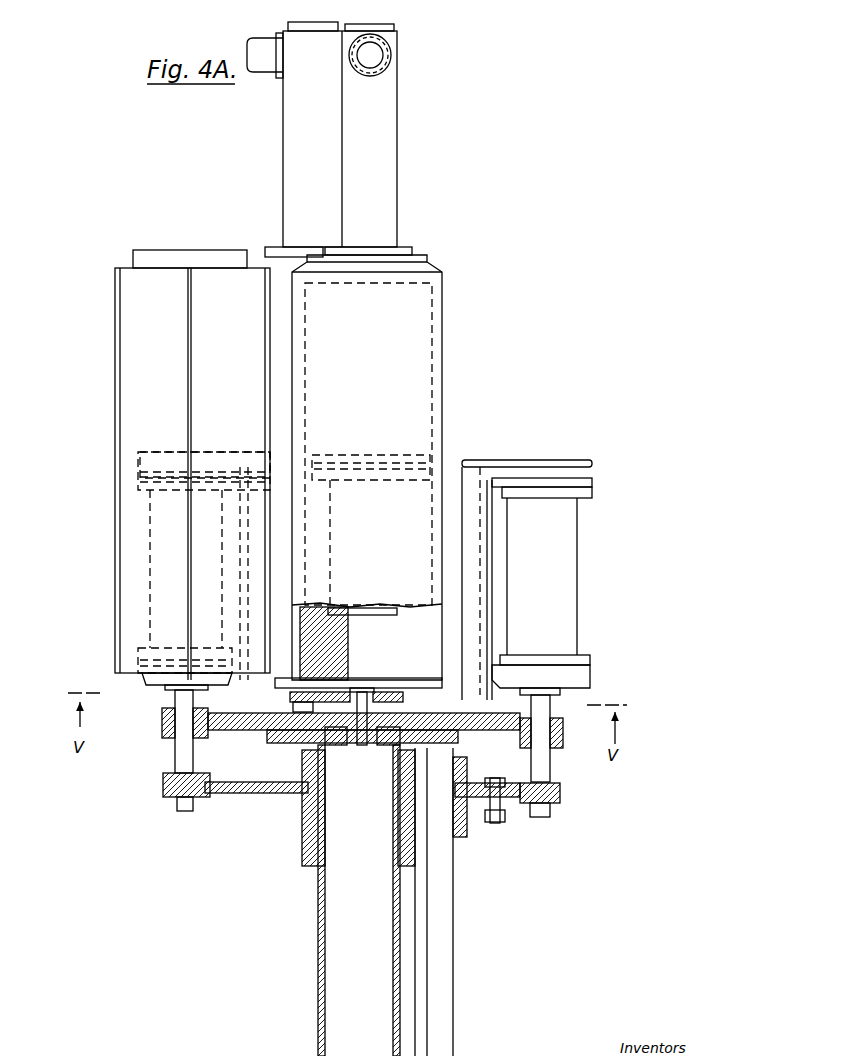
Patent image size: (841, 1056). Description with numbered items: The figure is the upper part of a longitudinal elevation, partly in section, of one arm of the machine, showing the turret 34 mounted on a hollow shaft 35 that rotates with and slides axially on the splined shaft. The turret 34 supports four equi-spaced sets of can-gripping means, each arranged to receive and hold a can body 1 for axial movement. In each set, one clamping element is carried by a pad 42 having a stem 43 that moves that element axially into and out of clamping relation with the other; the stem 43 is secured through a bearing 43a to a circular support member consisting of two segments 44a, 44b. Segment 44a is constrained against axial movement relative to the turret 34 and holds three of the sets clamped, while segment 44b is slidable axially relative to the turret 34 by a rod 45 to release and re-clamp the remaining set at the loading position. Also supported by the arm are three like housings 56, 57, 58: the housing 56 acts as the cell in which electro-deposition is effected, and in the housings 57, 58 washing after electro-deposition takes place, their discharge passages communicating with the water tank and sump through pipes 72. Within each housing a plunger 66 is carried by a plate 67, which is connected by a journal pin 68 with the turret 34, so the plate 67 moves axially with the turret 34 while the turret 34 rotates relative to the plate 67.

The pipe 72 is at (265, 62).
The housing 56 is at (445, 339).
The housing 57 is at (114, 411).
The turret 34 is at (250, 472).
The can body 1 is at (150, 550).
The plunger 66 is at (350, 678).
The journal pin 68 is at (373, 690).
The housing 58 is at (406, 681).
The plate 67 is at (390, 710).
The pad 42 is at (152, 681).
The stem 43 is at (175, 769).
The bearing 43a is at (165, 792).
The segment 44a is at (236, 795).
The segment 44b is at (507, 780).
The hollow shaft 35 is at (318, 921).
The rod 45 is at (443, 924).